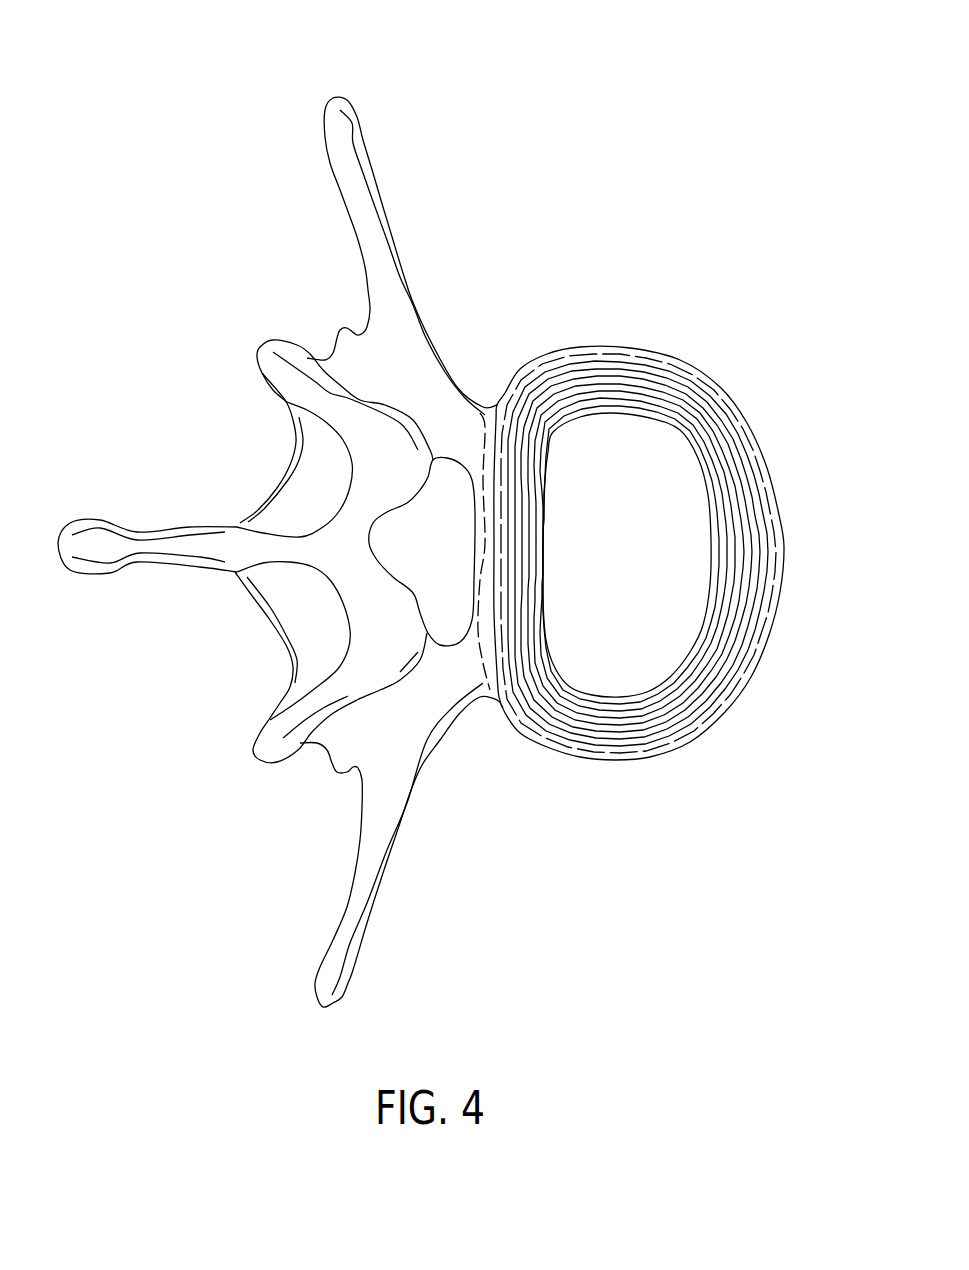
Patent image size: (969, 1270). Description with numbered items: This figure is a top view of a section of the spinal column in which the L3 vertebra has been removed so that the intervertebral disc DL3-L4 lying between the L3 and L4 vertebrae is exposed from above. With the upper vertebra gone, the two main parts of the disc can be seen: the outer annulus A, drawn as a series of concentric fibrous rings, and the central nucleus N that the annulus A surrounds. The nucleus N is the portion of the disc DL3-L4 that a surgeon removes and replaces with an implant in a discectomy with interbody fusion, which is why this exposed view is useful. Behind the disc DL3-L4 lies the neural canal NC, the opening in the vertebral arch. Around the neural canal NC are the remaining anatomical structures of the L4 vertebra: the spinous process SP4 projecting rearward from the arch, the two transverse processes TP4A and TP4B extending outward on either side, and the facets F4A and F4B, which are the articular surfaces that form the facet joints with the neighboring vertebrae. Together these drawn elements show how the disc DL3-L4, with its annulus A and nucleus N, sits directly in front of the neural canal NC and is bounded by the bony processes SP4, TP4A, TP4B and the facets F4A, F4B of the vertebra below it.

The transverse process TP4B is at (357, 113).
The facet F4B is at (273, 338).
The annulus A is at (608, 388).
The disc DL3-L4 is at (694, 518).
The spinous process SP4 is at (90, 517).
The neural canal NC is at (408, 553).
The nucleus N is at (677, 518).
The facet F4A is at (258, 762).
The transverse process TP4A is at (350, 988).